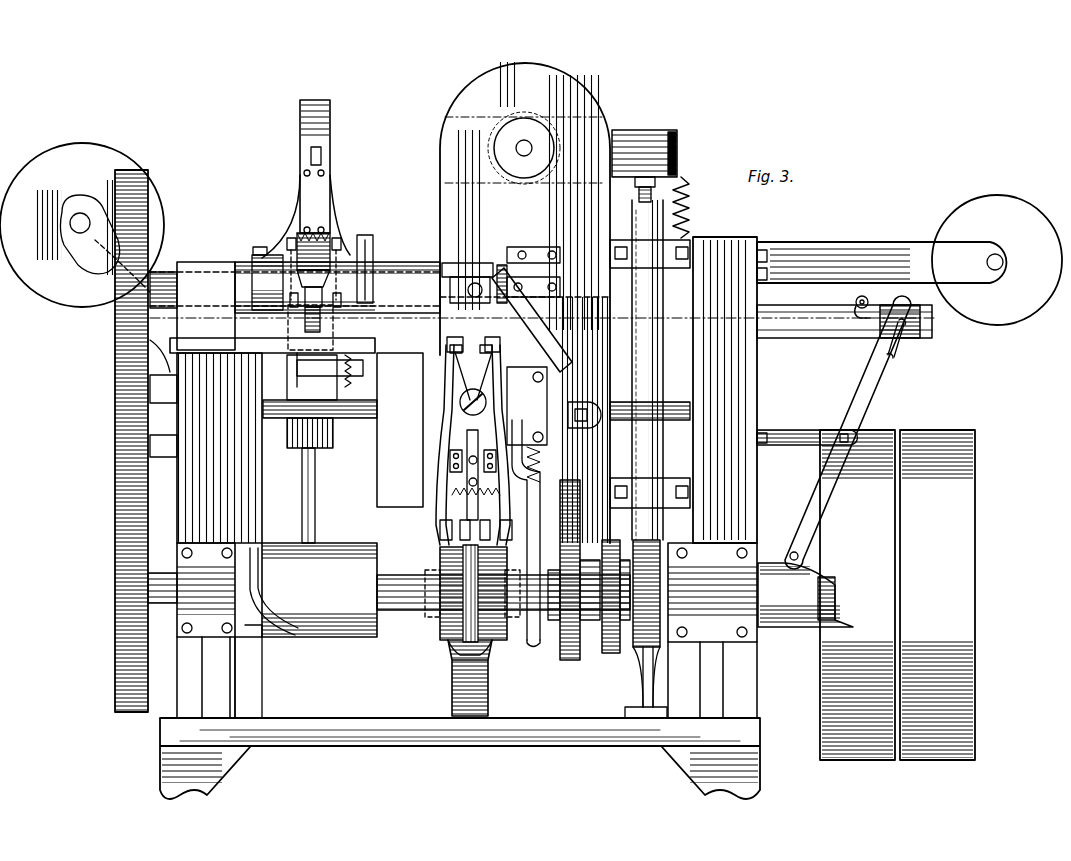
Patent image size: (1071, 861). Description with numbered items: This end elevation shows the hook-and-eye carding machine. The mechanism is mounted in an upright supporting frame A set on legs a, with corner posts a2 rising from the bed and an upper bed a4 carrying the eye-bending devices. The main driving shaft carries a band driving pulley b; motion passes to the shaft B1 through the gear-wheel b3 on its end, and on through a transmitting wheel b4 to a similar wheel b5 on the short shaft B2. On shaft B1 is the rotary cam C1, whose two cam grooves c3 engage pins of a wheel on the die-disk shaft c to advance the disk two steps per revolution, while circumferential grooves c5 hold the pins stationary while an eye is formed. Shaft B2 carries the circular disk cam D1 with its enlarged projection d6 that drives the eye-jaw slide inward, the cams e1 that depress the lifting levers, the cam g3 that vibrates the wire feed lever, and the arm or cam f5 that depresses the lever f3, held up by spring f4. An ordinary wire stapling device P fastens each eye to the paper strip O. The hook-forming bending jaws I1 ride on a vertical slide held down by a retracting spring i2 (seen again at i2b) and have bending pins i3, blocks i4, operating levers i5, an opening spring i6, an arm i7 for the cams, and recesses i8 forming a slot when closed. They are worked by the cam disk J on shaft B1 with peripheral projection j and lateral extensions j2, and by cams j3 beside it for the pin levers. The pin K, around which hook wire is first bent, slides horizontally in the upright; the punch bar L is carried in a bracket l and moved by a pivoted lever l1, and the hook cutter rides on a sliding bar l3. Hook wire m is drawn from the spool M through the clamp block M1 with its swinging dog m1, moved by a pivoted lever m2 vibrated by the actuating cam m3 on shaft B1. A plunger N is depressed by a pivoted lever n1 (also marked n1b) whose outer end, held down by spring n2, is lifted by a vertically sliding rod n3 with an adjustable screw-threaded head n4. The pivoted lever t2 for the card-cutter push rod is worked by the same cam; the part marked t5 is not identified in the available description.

The upright supporting frame A is at (460, 747).
The legs a is at (460, 773).
The corner posts a2 is at (496, 677).
The upper bed a4 is at (240, 327).
The band driving pulley b is at (897, 595).
The gear-wheel b3 is at (148, 573).
The transmitting wheel b4 is at (115, 441).
The wheel b5 is at (115, 333).
The shaft B1 is at (183, 605).
The short shaft B2 is at (162, 284).
The paper strip O is at (82, 225).
The shaft c is at (310, 480).
The cam grooves c3 is at (294, 637).
The circumferential grooves c5 is at (262, 570).
The rotary cam C1 is at (319, 590).
The circular disk cam D1 is at (542, 308).
The cam projection d6 is at (300, 262).
The cams e1 is at (288, 300).
The cam g3 is at (267, 278).
The wire stapling device P is at (305, 142).
The lever f3 is at (340, 402).
The spring f4 is at (362, 362).
The arm or cam f5 is at (373, 244).
The bending jaws I1 is at (445, 398).
The retracting spring i2 is at (453, 339).
The bending pins i3 is at (480, 339).
The blocks i4 is at (545, 462).
The operating levers i5 is at (460, 425).
The spring i6 is at (452, 505).
The arm i7 is at (450, 478).
The recess i8 is at (480, 352).
The retracting spring i2b is at (578, 535).
The cam projection j is at (465, 578).
The lateral extensions j2 is at (452, 652).
The cams j3 is at (473, 593).
The cam disk J is at (450, 690).
The pin K is at (473, 327).
The punch bar L is at (474, 272).
The bracket l is at (470, 284).
The pivoted lever l1 is at (560, 375).
The sliding bar l3 is at (540, 352).
The plunger N is at (460, 205).
The pivoted lever n1 is at (644, 153).
The pivoted lever n1b is at (650, 560).
The spring n2 is at (690, 207).
The vertically sliding rod n3 is at (650, 370).
The cap or head n4 is at (646, 180).
The spool of wire M is at (977, 205).
The clamp block M1 is at (905, 338).
The wire m is at (932, 322).
The swinging clamp or dog m1 is at (860, 320).
The pivoted lever m2 is at (880, 402).
The actuating cam m3 is at (760, 439).
The pivoted lever t2 is at (643, 660).
The rod end t5 is at (532, 643).